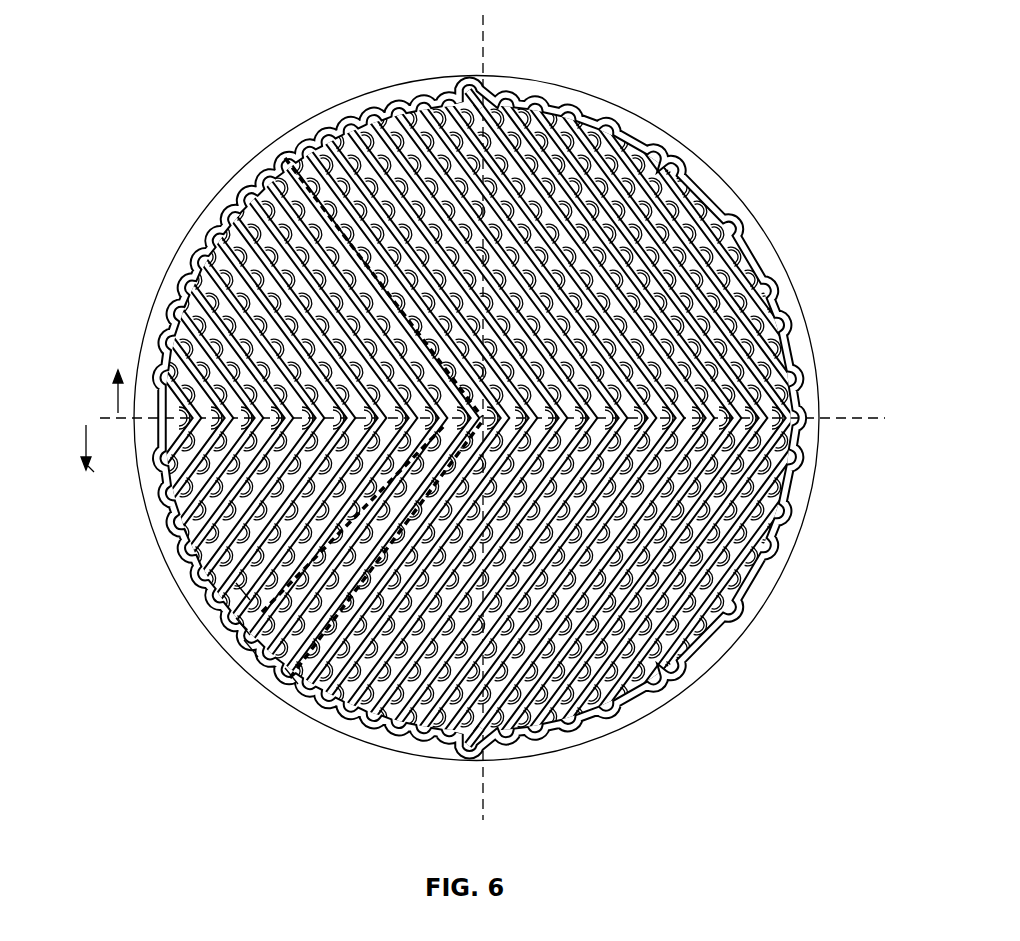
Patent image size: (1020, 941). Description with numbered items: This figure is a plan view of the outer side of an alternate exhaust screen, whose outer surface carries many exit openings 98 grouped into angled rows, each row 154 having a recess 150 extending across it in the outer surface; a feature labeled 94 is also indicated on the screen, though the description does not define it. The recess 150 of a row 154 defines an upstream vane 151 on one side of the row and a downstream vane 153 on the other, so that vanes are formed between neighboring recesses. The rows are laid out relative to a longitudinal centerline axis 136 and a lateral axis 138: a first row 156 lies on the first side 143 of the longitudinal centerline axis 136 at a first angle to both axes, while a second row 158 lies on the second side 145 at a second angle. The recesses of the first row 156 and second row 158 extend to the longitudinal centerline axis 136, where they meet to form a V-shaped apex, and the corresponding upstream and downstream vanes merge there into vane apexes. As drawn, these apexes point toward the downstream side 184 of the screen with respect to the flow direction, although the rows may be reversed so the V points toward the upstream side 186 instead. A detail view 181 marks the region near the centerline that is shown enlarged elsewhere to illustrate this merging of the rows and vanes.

The heat exchanger core 94 is at (510, 500).
The exit openings 98 is at (299, 581).
The longitudinal centerline axis 136 is at (106, 418).
The lateral axis 138 is at (487, 47).
The first side 143 is at (97, 431).
The second side 145 is at (113, 385).
The recess 150 is at (262, 634).
The upstream vane 151 is at (238, 588).
The downstream vane 153 is at (240, 622).
The row 154 is at (247, 648).
The first row 156 is at (290, 676).
The second row 158 is at (278, 157).
The detail view 181 is at (510, 500).
The downstream side 184 is at (826, 393).
The upstream side 186 is at (92, 472).